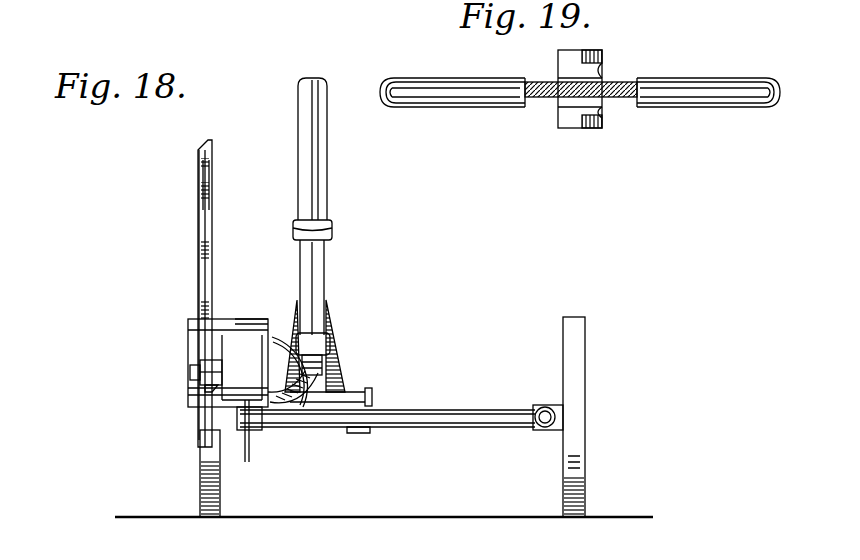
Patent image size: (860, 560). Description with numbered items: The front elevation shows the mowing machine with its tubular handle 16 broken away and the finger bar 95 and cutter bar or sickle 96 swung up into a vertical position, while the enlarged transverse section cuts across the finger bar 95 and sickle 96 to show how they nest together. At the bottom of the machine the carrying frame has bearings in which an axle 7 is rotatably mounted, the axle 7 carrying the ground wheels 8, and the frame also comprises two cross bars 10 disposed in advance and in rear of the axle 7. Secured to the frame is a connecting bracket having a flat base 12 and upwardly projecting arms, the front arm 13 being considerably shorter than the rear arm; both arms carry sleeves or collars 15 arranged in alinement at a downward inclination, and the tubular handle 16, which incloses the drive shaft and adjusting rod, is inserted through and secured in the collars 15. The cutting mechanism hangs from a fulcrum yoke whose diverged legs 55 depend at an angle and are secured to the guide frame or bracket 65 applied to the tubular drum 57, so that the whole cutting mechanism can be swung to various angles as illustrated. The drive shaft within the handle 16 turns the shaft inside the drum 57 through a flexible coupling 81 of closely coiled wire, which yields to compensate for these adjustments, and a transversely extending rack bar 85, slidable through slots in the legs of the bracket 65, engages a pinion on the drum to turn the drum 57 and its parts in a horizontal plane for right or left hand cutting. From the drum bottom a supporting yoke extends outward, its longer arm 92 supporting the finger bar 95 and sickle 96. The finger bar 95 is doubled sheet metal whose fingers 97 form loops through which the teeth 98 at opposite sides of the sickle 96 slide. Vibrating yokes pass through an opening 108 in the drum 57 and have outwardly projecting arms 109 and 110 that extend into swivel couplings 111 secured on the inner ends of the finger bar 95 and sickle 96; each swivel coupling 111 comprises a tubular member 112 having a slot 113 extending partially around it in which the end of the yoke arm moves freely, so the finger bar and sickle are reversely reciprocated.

In FIG. 18, the axle 7 is at (513, 425).
In FIG. 18, the ground wheels 8 is at (585, 372).
In FIG. 18, the cross bars 10 is at (475, 420).
In FIG. 18, the flat base 12 is at (372, 400).
In FIG. 18, the front arm 13 is at (335, 375).
In FIG. 18, the sleeves or collars 15 is at (332, 232).
In FIG. 18, the tubular handle 16 is at (327, 185).
In FIG. 18, the diverged legs 55 is at (285, 330).
In FIG. 18, the tubular drum 57 is at (230, 350).
In FIG. 18, the guide frame or bracket 65 is at (255, 320).
In FIG. 18, the coupling 81 is at (345, 385).
In FIG. 18, the rack bar 85 is at (247, 450).
In FIG. 18, the longer arm 92 is at (197, 265).
In FIG. 18, the finger bar 95 is at (213, 225).
In FIG. 19, the finger bar 95 is at (520, 80).
In FIG. 18, the cutter bar or sickle 96 is at (200, 228).
In FIG. 19, the cutter bar or sickle 96 is at (620, 100).
In FIG. 19, the fingers 97 is at (430, 78).
In FIG. 19, the teeth 98 is at (470, 95).
In FIG. 18, the opening 108 is at (200, 390).
In FIG. 18, the outwardly projecting arm 109 is at (200, 383).
In FIG. 18, the outwardly projecting arm 110 is at (190, 370).
In FIG. 19, the swivel couplings 111 is at (558, 66).
In FIG. 19, the tubular member 112 is at (590, 50).
In FIG. 19, the slot 113 is at (605, 66).